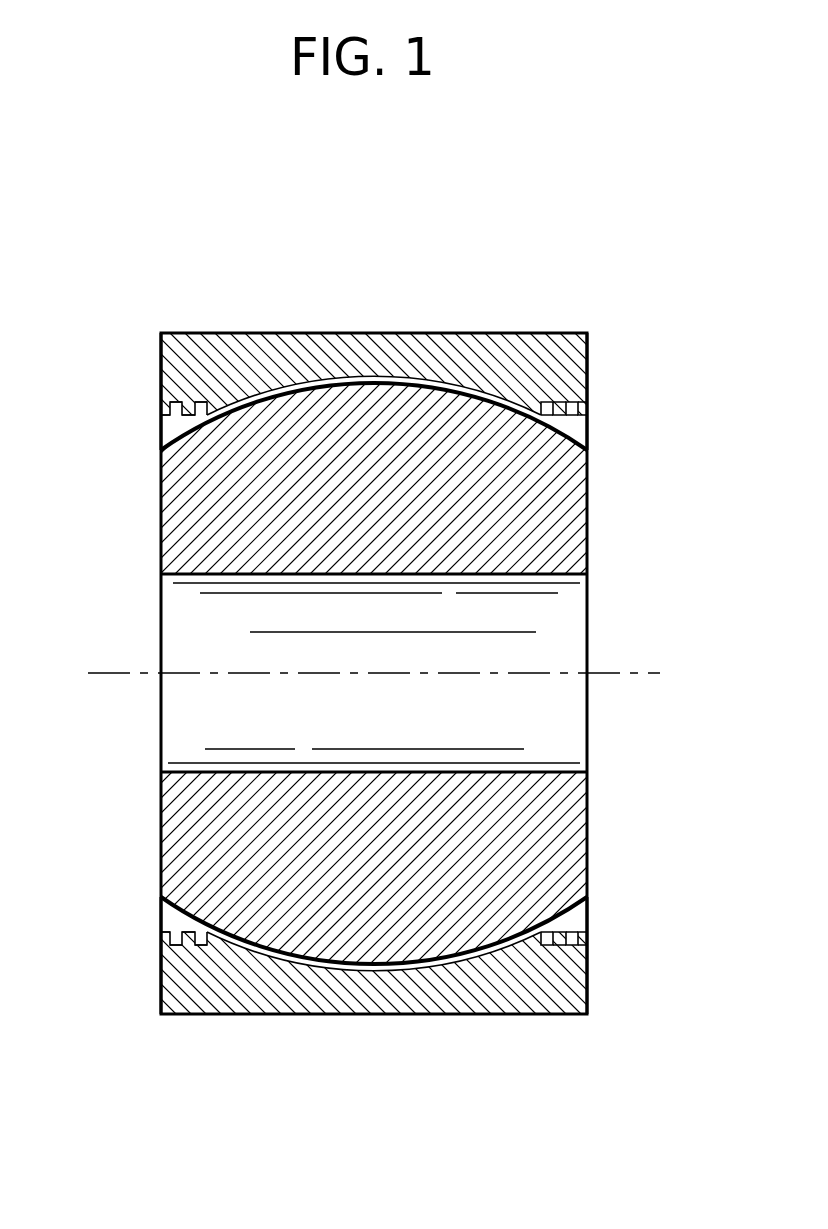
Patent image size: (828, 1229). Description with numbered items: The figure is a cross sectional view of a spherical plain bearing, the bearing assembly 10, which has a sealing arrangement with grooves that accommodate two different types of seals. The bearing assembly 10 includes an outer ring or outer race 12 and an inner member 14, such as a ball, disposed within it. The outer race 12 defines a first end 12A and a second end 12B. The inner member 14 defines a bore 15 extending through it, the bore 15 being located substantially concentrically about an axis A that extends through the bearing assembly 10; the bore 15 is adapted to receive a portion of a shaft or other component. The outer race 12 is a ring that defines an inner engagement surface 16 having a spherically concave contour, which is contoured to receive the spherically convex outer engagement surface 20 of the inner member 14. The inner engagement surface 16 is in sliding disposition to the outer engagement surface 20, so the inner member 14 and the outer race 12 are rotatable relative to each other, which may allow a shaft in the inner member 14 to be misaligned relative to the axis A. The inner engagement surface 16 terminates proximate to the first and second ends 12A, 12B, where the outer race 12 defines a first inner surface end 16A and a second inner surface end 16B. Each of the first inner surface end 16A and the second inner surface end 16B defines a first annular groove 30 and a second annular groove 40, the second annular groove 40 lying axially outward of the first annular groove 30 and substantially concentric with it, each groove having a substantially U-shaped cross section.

The bearing assembly 10 is at (366, 224).
The outer race 12 is at (503, 331).
The first end 12A is at (145, 345).
The second end 12B is at (603, 343).
The inner member 14 is at (588, 508).
The bore 15 is at (610, 619).
The inner engagement surface 16 is at (333, 378).
The first inner surface end 16A is at (214, 381).
The second inner surface end 16B is at (581, 381).
The outer engagement surface 20 is at (577, 438).
The first annular groove 30 is at (580, 400).
The second annular groove 40 is at (587, 405).
The axis A is at (360, 675).